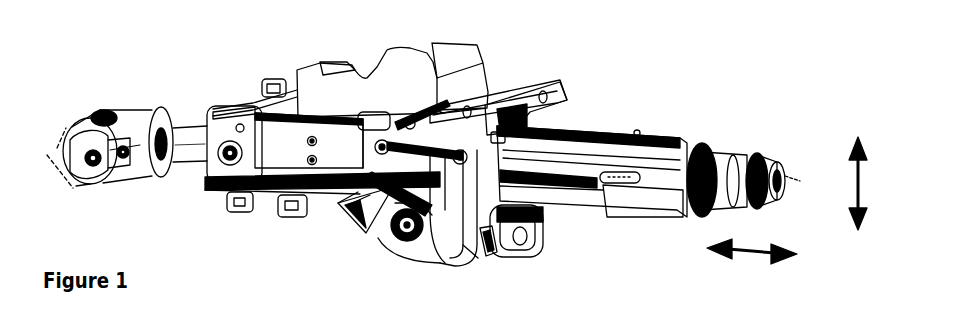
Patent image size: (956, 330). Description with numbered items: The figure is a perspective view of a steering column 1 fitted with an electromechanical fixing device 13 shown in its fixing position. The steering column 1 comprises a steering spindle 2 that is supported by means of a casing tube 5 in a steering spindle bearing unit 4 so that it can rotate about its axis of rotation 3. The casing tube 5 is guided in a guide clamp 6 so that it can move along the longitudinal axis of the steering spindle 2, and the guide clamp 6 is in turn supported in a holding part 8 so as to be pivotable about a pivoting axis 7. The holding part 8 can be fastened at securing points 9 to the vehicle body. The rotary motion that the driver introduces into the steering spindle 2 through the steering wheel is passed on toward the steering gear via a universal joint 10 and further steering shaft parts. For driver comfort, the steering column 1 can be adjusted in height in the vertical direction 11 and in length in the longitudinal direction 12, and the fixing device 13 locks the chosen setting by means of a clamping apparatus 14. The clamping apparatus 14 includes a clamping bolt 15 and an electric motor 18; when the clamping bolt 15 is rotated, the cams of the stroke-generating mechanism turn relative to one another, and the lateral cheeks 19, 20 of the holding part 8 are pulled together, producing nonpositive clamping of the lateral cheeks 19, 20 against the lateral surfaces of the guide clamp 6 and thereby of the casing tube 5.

The steering column 1 is at (604, 50).
The steering spindle 2 is at (730, 150).
The axis of rotation 3 is at (823, 185).
The steering spindle bearing unit 4 is at (663, 112).
The casing tube 5 is at (556, 148).
The guide clamp 6 is at (492, 250).
The pivoting axis 7 is at (200, 163).
The holding part 8 is at (509, 100).
The securing points 9 is at (246, 100).
The universal joint 10 is at (90, 100).
The vertical direction 11 is at (855, 176).
The longitudinal direction 12 is at (750, 255).
The fixing device 13 is at (392, 270).
The clamping apparatus 14 is at (418, 270).
The clamping bolt 15 is at (402, 230).
The electric motor 18 is at (326, 152).
The lateral cheek 19 is at (470, 260).
The lateral cheek 20 is at (520, 253).